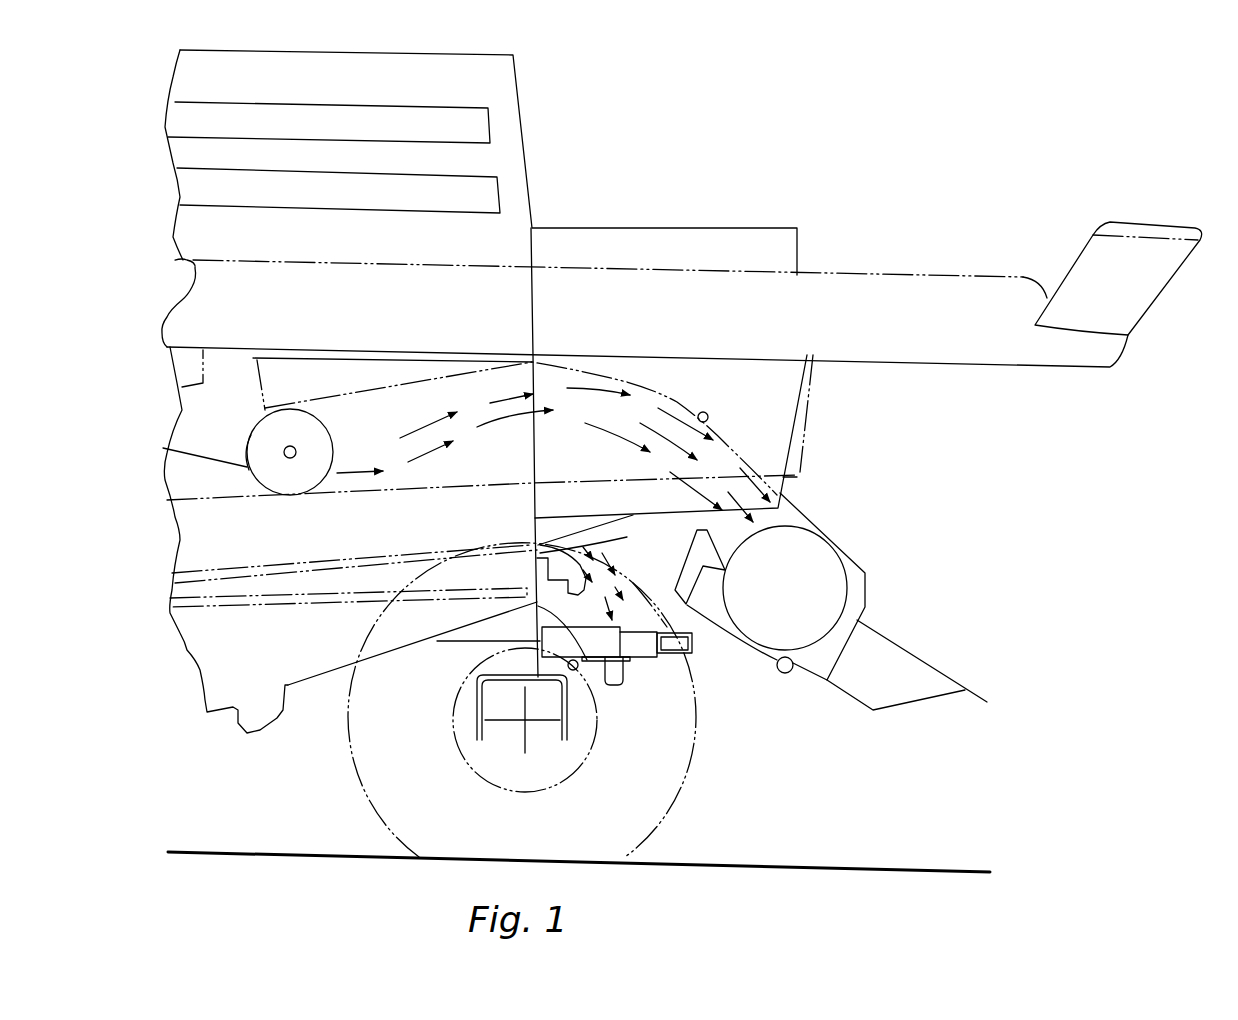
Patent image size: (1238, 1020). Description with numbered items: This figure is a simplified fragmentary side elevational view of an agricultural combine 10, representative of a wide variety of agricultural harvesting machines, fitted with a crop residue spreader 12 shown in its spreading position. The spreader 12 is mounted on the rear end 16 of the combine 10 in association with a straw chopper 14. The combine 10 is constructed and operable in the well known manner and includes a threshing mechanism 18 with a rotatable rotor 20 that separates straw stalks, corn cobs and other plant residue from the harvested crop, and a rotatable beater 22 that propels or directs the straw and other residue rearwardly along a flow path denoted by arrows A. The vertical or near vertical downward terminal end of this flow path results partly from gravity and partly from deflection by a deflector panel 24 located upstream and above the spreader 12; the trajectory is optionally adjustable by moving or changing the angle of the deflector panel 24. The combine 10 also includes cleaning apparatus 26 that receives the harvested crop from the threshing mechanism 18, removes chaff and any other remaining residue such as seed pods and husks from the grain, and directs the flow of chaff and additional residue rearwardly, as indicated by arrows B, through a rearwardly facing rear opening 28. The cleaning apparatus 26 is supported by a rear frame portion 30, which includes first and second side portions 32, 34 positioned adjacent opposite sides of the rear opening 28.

The agricultural combine 10 is at (882, 449).
The crop residue spreader 12 is at (703, 653).
The straw chopper 14 is at (803, 672).
The rear end 16 is at (437, 643).
The threshing mechanism 18 is at (205, 356).
The rotor 20 is at (205, 362).
The beater 22 is at (322, 425).
The deflector panel 24 is at (740, 458).
The cleaning apparatus 26 is at (287, 572).
The rear opening 28 is at (552, 536).
The rear frame portion 30 is at (490, 645).
The first side portion 32 is at (574, 716).
The second side portion 34 is at (577, 703).